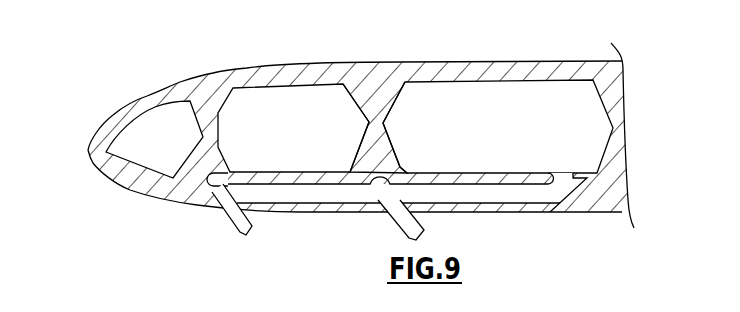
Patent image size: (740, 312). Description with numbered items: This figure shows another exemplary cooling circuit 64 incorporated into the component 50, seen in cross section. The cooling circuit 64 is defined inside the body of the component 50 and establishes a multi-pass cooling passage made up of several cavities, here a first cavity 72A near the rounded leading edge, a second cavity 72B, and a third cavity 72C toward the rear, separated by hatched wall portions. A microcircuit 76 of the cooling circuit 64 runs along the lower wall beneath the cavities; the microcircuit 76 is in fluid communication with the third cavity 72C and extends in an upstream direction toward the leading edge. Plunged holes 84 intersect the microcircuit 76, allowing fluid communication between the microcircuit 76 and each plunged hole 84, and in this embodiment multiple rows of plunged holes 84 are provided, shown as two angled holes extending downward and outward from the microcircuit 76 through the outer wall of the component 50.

The component 50 is at (348, 50).
The cooling circuit 64 is at (430, 78).
The first cavity 72A is at (176, 154).
The second cavity 72B is at (315, 140).
The third cavity 72C is at (521, 140).
The microcircuit 76 is at (490, 197).
The plunged holes 84 is at (233, 208).